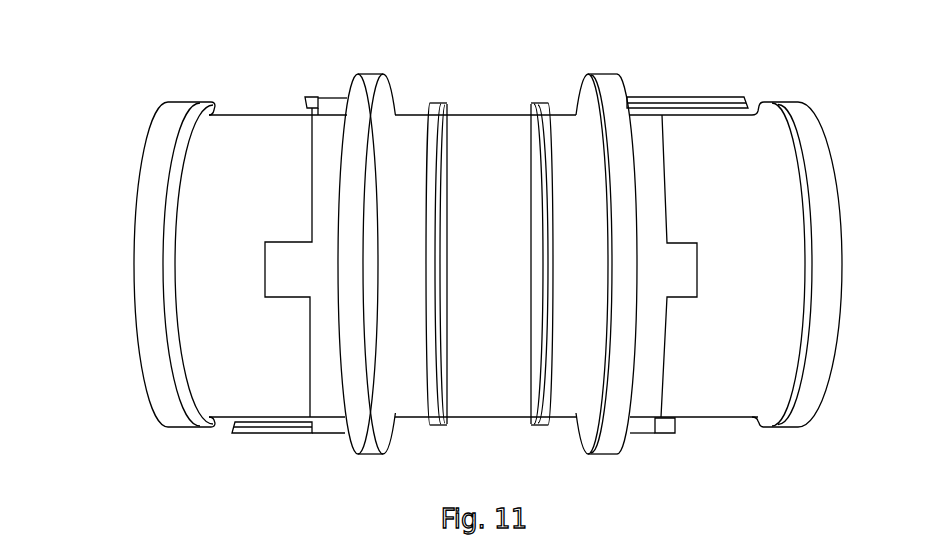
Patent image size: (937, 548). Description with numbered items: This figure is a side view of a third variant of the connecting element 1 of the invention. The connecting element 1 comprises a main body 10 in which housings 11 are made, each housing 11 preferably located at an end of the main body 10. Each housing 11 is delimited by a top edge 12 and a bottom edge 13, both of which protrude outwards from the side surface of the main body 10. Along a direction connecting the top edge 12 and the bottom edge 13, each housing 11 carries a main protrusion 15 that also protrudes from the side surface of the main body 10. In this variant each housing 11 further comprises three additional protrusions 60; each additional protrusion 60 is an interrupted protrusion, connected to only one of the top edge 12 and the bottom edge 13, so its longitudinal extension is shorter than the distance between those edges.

The connecting element 1 is at (114, 266).
The main body 10 is at (492, 147).
The housing 11 is at (263, 135).
The top edge 12 is at (178, 116).
The bottom edge 13 is at (331, 104).
The main protrusion 15 is at (270, 434).
The additional protrusion 60 is at (313, 96).